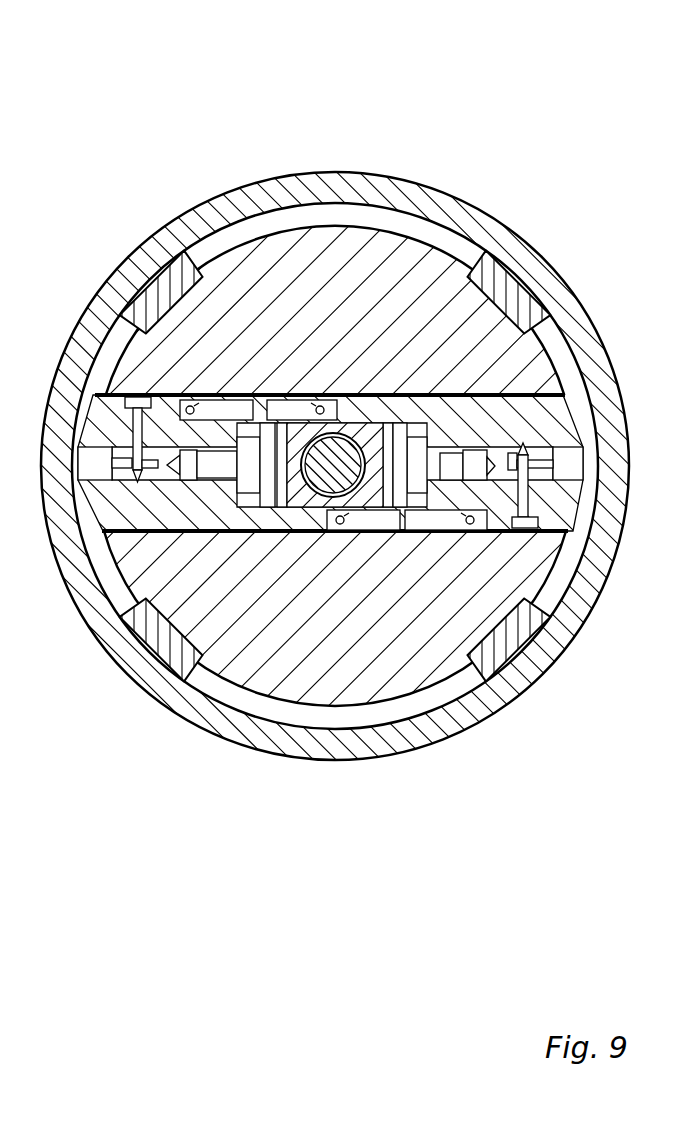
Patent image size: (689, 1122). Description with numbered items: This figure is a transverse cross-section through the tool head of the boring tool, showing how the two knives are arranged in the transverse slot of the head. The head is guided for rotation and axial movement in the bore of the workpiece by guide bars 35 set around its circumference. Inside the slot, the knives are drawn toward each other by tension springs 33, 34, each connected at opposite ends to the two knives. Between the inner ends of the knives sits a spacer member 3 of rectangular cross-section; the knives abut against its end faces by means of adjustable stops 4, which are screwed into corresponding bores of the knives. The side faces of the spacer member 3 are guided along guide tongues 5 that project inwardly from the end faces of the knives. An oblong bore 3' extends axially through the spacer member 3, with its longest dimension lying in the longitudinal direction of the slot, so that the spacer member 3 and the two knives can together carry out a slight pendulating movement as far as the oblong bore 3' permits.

The spacer member 3 is at (344, 561).
The oblong bore 3' is at (430, 335).
The adjustable stops 4 is at (387, 490).
The guide tongues 5 is at (398, 467).
The tension spring 33 is at (435, 520).
The tension spring 34 is at (232, 406).
The guide bars 35 is at (492, 632).